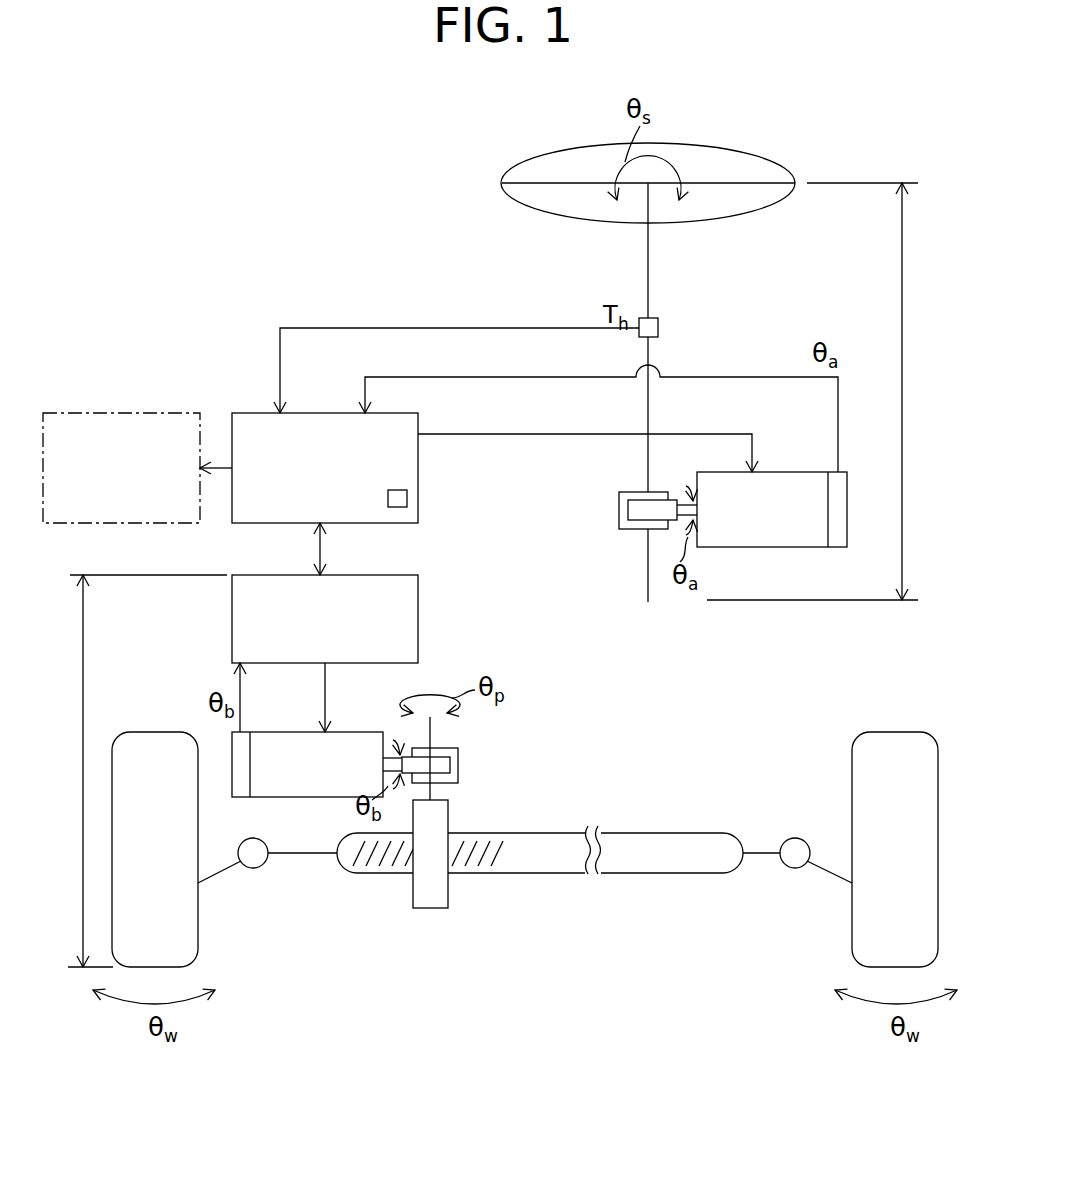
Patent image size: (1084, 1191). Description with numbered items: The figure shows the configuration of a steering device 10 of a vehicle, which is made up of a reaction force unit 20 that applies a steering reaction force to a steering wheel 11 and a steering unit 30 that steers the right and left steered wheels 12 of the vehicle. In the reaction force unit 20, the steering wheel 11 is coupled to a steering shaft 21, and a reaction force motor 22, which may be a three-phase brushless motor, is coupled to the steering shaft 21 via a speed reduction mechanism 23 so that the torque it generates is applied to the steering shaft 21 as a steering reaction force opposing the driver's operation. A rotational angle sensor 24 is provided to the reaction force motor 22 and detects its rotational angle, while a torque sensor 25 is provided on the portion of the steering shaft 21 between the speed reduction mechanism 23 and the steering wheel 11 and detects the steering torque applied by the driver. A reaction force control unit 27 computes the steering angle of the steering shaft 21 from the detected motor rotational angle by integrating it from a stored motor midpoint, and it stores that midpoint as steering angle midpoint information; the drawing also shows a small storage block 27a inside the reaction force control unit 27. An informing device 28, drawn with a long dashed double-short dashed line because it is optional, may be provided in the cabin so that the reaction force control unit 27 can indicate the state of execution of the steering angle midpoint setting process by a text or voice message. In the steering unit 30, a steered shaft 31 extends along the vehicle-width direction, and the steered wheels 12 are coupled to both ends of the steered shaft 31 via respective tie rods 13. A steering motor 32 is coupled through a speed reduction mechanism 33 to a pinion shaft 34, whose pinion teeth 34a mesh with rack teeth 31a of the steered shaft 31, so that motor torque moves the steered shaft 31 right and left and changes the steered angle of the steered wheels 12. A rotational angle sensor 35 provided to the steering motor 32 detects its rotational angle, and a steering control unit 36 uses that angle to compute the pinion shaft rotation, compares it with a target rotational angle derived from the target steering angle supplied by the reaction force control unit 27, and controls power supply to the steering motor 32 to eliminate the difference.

The steering device 10 is at (817, 150).
The steering wheel 11 is at (735, 150).
The steered wheels 12 is at (198, 933).
The tie rods 13 is at (325, 860).
The reaction force unit 20 is at (905, 425).
The steering shaft 21 is at (652, 250).
The reaction force motor 22 is at (780, 548).
The speed reduction mechanism 23 is at (617, 505).
The rotational angle sensor 24 is at (835, 548).
The torque sensor 25 is at (660, 328).
The reaction force control unit 27 is at (395, 412).
The storage unit 27a is at (407, 498).
The informing device 28 is at (135, 413).
The steering unit 30 is at (83, 782).
The steered shaft 31 is at (545, 875).
The rack teeth 31a is at (458, 876).
The steering motor 32 is at (370, 730).
The speed reduction mechanism 33 is at (463, 775).
The pinion shaft 34 is at (437, 726).
The pinion teeth 34a is at (430, 908).
The rotational angle sensor 35 is at (232, 780).
The steering control unit 36 is at (232, 630).